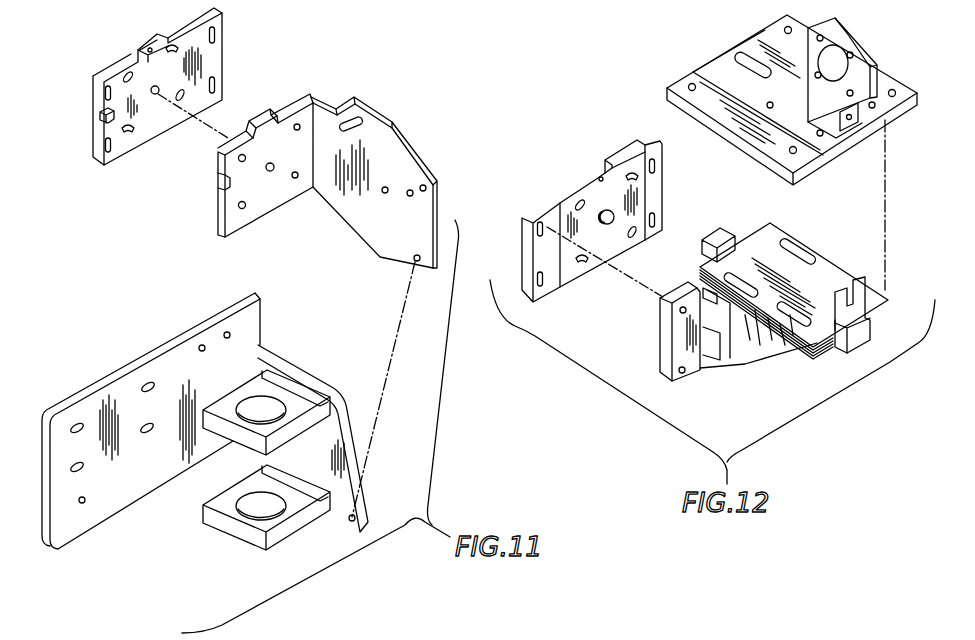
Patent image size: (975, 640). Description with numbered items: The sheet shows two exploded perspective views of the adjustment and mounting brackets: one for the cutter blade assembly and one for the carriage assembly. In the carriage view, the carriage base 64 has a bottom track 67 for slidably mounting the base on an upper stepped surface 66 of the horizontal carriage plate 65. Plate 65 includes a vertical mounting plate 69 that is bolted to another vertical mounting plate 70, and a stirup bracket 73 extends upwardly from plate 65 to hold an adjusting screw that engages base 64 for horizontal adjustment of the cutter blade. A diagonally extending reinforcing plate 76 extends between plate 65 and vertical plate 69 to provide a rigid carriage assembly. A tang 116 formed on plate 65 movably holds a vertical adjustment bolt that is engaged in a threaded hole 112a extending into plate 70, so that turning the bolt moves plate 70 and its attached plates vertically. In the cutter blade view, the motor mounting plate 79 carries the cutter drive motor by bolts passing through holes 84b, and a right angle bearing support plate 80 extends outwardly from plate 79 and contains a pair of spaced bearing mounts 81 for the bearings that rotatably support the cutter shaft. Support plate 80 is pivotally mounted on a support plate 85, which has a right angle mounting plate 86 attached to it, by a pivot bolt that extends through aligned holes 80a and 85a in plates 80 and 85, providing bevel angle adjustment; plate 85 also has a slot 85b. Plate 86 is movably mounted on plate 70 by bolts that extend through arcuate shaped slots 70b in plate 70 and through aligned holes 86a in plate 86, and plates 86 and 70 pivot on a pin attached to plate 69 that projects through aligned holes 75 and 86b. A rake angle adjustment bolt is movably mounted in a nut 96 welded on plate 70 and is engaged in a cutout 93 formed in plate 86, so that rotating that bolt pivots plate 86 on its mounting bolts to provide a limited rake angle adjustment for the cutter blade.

In FIG. 11, the vertical mounting plate 70 is at (212, 58).
In FIG. 12, the vertical mounting plate 70 is at (572, 190).
In FIG. 11, the arcuate shaped slots 70b is at (178, 50).
In FIG. 12, the arcuate shaped slots 70b is at (633, 177).
In FIG. 11, the threaded hole 112a is at (146, 51).
In FIG. 12, the threaded hole 112a is at (600, 177).
In FIG. 11, the nut 96 is at (105, 118).
In FIG. 11, the cutout 93 is at (222, 182).
In FIG. 11, the right angle mounting plate 86 is at (272, 190).
In FIG. 11, the holes 86a is at (297, 123).
In FIG. 11, the hole 86b is at (270, 162).
In FIG. 11, the support plate 85 is at (403, 162).
In FIG. 11, the hole 85a is at (413, 260).
In FIG. 11, the slot 85b is at (357, 117).
In FIG. 11, the motor mounting plate 79 is at (127, 390).
In FIG. 11, the holes 84b is at (152, 380).
In FIG. 11, the bearing mounts 81 is at (222, 408).
In FIG. 11, the right angle bearing support plate 80 is at (333, 465).
In FIG. 11, the hole 80a is at (350, 523).
In FIG. 12, the carriage base 64 is at (720, 72).
In FIG. 12, the bottom track 67 is at (853, 150).
In FIG. 12, the tang 116 is at (703, 240).
In FIG. 12, the upper stepped surface 66 is at (762, 247).
In FIG. 12, the horizontal carriage plate 65 is at (823, 277).
In FIG. 12, the hole 75 is at (607, 223).
In FIG. 12, the vertical mounting plate 69 is at (690, 358).
In FIG. 12, the diagonally extending reinforcing plate 76 is at (763, 345).
In FIG. 12, the stirup bracket 73 is at (863, 347).